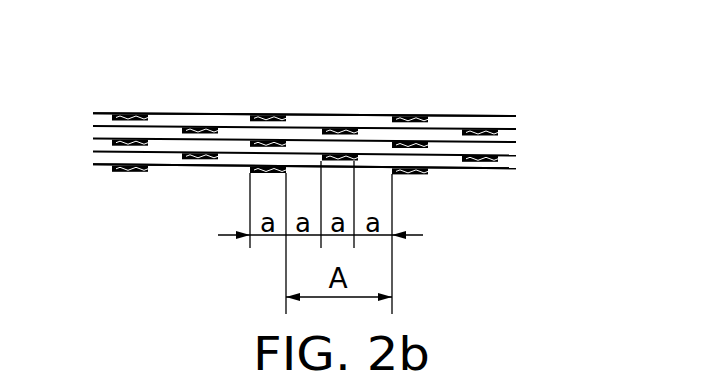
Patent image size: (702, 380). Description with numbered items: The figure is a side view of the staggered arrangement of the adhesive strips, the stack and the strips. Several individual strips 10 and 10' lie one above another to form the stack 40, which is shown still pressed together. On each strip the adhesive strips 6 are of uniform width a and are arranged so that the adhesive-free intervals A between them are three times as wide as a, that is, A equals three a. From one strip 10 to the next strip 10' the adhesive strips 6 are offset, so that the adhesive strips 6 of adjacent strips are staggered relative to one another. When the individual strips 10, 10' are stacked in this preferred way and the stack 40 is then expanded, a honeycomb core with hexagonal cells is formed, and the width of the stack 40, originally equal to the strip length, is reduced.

The stack 40 is at (466, 83).
The dielectric layer 10 is at (304, 73).
The dielectric layers 10' is at (304, 104).
The adhesive strips 6 is at (328, 128).